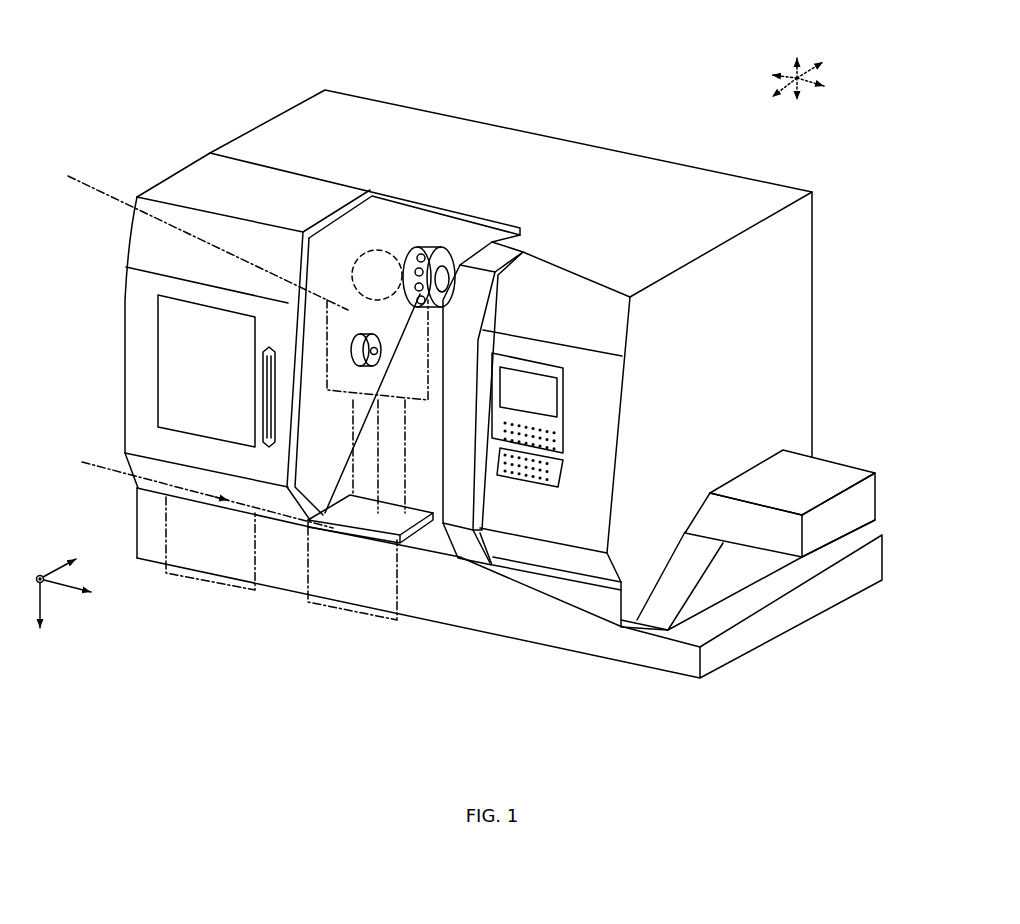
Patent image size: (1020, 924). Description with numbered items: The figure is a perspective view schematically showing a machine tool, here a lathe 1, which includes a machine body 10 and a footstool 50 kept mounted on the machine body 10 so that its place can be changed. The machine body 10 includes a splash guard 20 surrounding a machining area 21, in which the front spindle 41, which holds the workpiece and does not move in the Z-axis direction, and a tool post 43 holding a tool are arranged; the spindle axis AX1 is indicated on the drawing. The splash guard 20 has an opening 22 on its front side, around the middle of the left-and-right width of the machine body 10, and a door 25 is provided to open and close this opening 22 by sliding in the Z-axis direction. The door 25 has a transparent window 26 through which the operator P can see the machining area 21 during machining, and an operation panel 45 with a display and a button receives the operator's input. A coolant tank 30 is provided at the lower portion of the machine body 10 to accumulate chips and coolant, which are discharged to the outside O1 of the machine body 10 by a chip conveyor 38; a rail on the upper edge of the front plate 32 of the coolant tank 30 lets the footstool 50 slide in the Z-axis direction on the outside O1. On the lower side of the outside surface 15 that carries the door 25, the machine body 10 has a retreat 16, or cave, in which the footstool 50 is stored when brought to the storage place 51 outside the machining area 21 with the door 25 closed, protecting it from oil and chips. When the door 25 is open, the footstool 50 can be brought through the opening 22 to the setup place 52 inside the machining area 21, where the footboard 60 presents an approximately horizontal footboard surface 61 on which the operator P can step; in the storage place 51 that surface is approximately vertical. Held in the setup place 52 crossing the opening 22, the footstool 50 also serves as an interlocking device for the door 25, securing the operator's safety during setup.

The lathe 1 is at (126, 36).
The machine body 10 is at (818, 190).
The outside surface 15 is at (548, 530).
The retreat 16 is at (155, 507).
The splash guard 20 is at (597, 305).
The machining area 21 is at (467, 238).
The opening 22 is at (313, 331).
The door 25 is at (126, 278).
The transparent window 26 is at (199, 397).
The coolant tank 30 is at (549, 624).
The front plate 32 is at (273, 567).
The chip conveyor 38 is at (827, 457).
The front spindle 41 is at (356, 336).
The tool post 43 is at (436, 245).
The operation panel 45 is at (563, 397).
The footstool 50 is at (408, 551).
The storage place 51 is at (228, 588).
The setup place 52 is at (379, 548).
The footboard 60 is at (443, 522).
The footboard surface 61 is at (288, 487).
The spindle axis AX1 is at (186, 489).
The operator P is at (200, 235).
The outside O1 is at (160, 650).